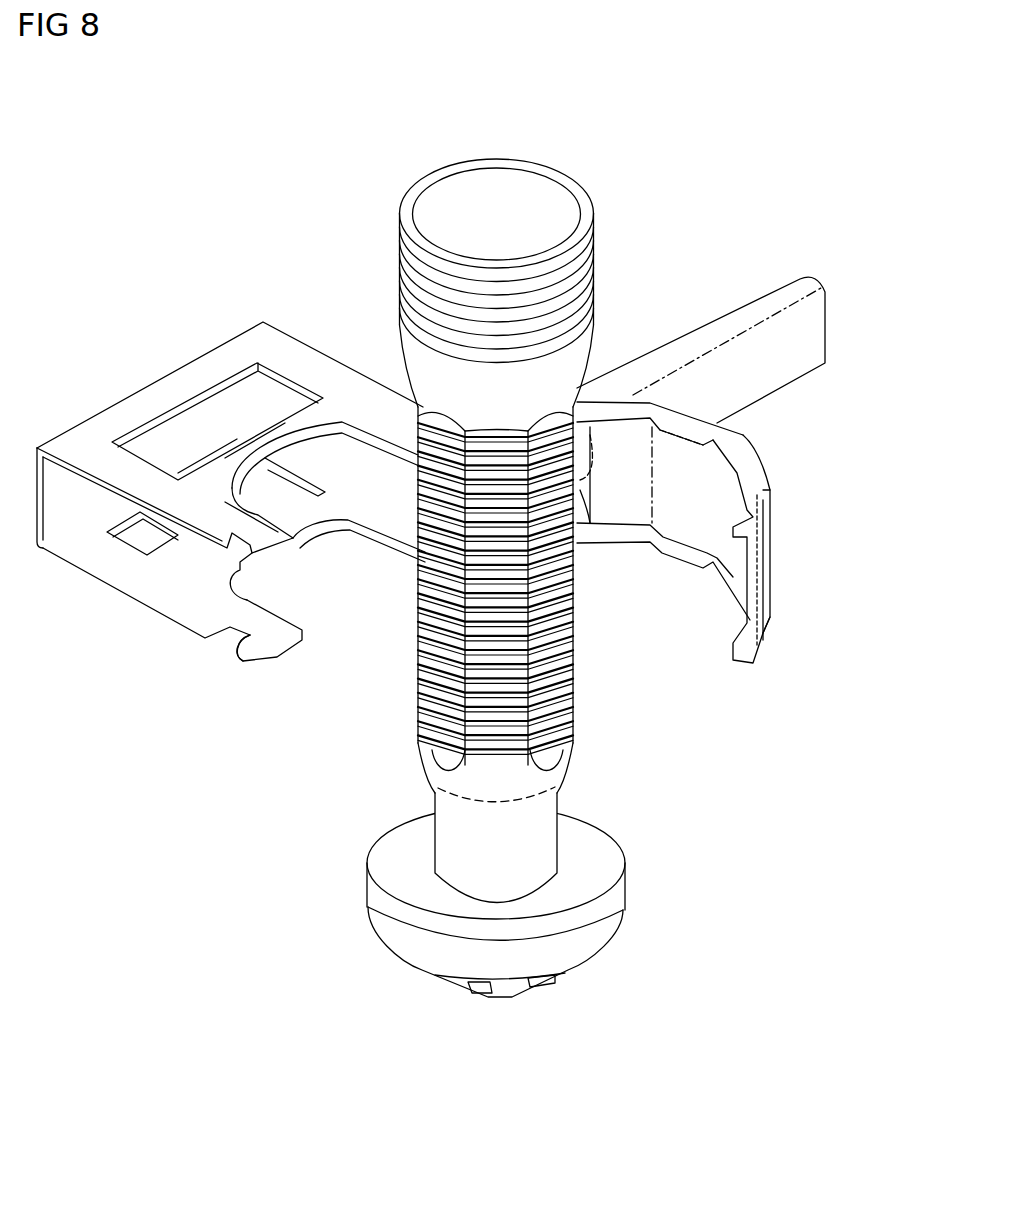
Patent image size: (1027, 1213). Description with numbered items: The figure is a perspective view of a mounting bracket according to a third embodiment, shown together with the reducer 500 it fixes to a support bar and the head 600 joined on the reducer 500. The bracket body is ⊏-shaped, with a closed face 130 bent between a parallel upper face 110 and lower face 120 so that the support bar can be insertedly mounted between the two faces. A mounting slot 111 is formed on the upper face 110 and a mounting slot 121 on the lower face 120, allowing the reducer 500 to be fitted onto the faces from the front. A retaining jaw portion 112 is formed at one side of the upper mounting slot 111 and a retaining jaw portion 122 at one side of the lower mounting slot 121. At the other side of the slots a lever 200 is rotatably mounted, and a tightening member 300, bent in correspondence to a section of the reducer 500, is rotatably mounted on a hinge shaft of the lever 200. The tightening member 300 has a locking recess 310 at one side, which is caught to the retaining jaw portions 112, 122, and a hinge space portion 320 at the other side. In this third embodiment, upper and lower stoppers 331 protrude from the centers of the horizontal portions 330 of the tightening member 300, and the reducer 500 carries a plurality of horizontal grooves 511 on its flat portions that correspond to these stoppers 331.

The upper face 110 is at (350, 386).
The mounting slot 111 is at (392, 447).
The retaining jaw portion 112 is at (245, 577).
The lower face 120 is at (205, 607).
The mounting slot 121 is at (403, 553).
The retaining jaw portion 122 is at (238, 660).
The closed face 130 is at (55, 500).
The lever 200 is at (642, 372).
The tightening member 300 is at (768, 460).
The locking recess 310 is at (770, 562).
The hinge space portion 320 is at (590, 492).
The horizontal portion 330 is at (722, 420).
The stopper 331 is at (681, 562).
The reducer 500 is at (661, 212).
The horizontal groove 511 is at (578, 701).
The head 600 is at (626, 895).